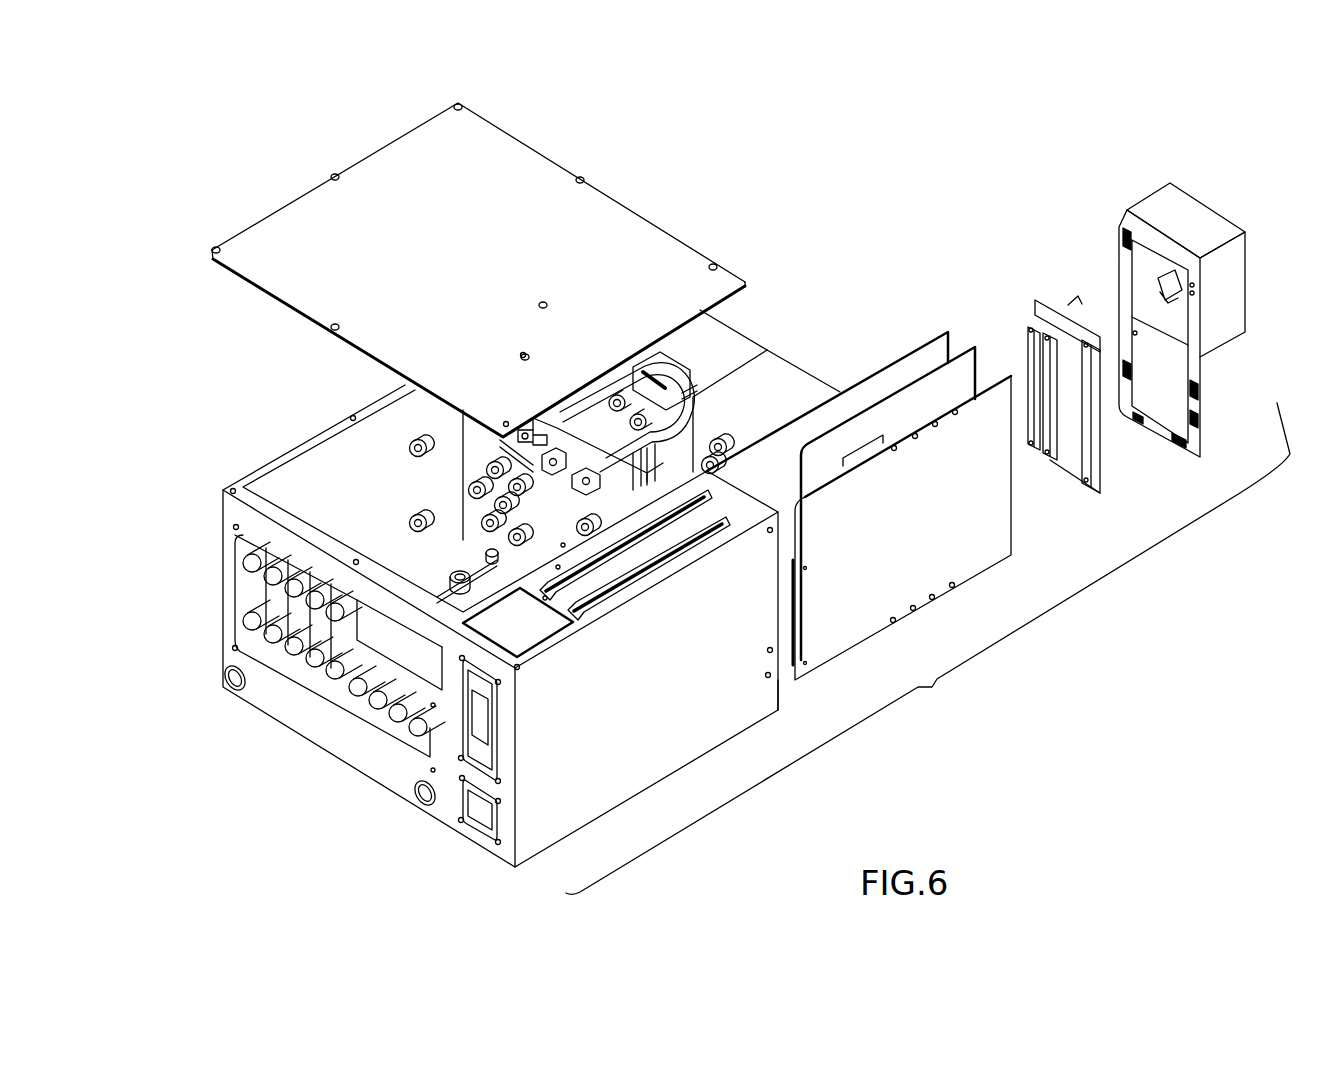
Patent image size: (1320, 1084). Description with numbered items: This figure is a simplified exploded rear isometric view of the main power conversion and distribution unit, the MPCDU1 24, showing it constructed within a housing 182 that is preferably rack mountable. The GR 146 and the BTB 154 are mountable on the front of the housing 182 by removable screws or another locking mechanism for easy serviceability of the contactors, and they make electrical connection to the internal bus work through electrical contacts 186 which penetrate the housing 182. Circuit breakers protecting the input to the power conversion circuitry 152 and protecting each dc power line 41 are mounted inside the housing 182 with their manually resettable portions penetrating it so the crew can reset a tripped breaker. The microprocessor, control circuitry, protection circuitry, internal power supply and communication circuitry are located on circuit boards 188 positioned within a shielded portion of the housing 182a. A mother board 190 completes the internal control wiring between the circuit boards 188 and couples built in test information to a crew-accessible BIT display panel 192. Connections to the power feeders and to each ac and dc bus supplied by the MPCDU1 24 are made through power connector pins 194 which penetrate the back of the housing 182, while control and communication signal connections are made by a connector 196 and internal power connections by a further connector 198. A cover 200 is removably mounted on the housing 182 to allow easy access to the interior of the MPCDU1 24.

The MPCDU1 24 is at (935, 686).
The dc power line 41 is at (544, 412).
The GR 146 is at (790, 363).
The power conversion circuitry 152 is at (572, 424).
The BTB 154 is at (727, 320).
The housing 182 is at (262, 466).
The shielded portion of the housing 182a is at (752, 737).
The electrical contacts 186 is at (487, 516).
The circuit boards 188 is at (1002, 373).
The mother board 190 is at (1037, 310).
The BIT display panel 192 is at (1143, 203).
The power connector pins 194 is at (246, 626).
The connector 196 is at (497, 741).
The connector 198 is at (473, 813).
The cover 200 is at (493, 250).